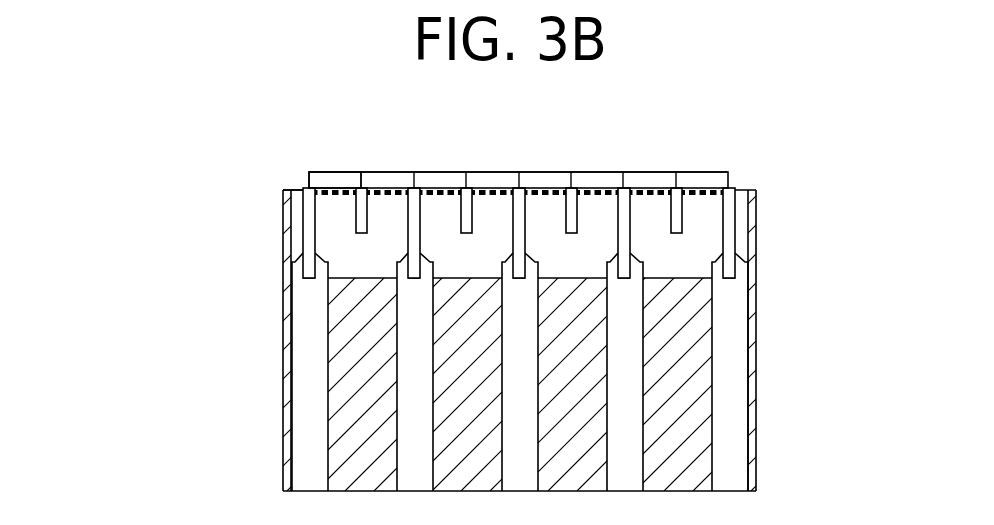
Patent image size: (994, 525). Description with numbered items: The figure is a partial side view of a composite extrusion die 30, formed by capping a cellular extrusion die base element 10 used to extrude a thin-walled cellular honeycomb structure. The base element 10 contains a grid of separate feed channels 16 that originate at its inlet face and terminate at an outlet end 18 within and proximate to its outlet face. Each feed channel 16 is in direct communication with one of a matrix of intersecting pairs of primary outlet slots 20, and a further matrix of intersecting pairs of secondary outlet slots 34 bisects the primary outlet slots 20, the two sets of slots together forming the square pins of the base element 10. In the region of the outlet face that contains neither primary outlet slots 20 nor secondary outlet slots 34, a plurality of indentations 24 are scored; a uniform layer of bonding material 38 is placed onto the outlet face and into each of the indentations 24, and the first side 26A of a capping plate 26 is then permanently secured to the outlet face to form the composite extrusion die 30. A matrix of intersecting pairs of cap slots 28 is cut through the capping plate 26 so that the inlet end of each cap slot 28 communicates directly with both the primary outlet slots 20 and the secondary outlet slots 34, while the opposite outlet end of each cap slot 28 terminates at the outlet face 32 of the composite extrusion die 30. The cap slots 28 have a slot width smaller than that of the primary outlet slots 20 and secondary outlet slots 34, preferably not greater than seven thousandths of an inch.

The cellular extrusion die base element 10 is at (770, 430).
The feed channels 16 is at (660, 346).
The outlet end 18 is at (296, 261).
The primary outlet slots 20 is at (420, 232).
The indentations 24 is at (716, 186).
The capping plate 26 is at (296, 176).
The first side of the capping plate 26A is at (307, 189).
The cap slots 28 is at (577, 187).
The composite extrusion die 30 is at (160, 273).
The outlet face of the composite extrusion die 32 is at (705, 163).
The secondary outlet slots 34 is at (686, 217).
The bonding material 38 is at (398, 188).